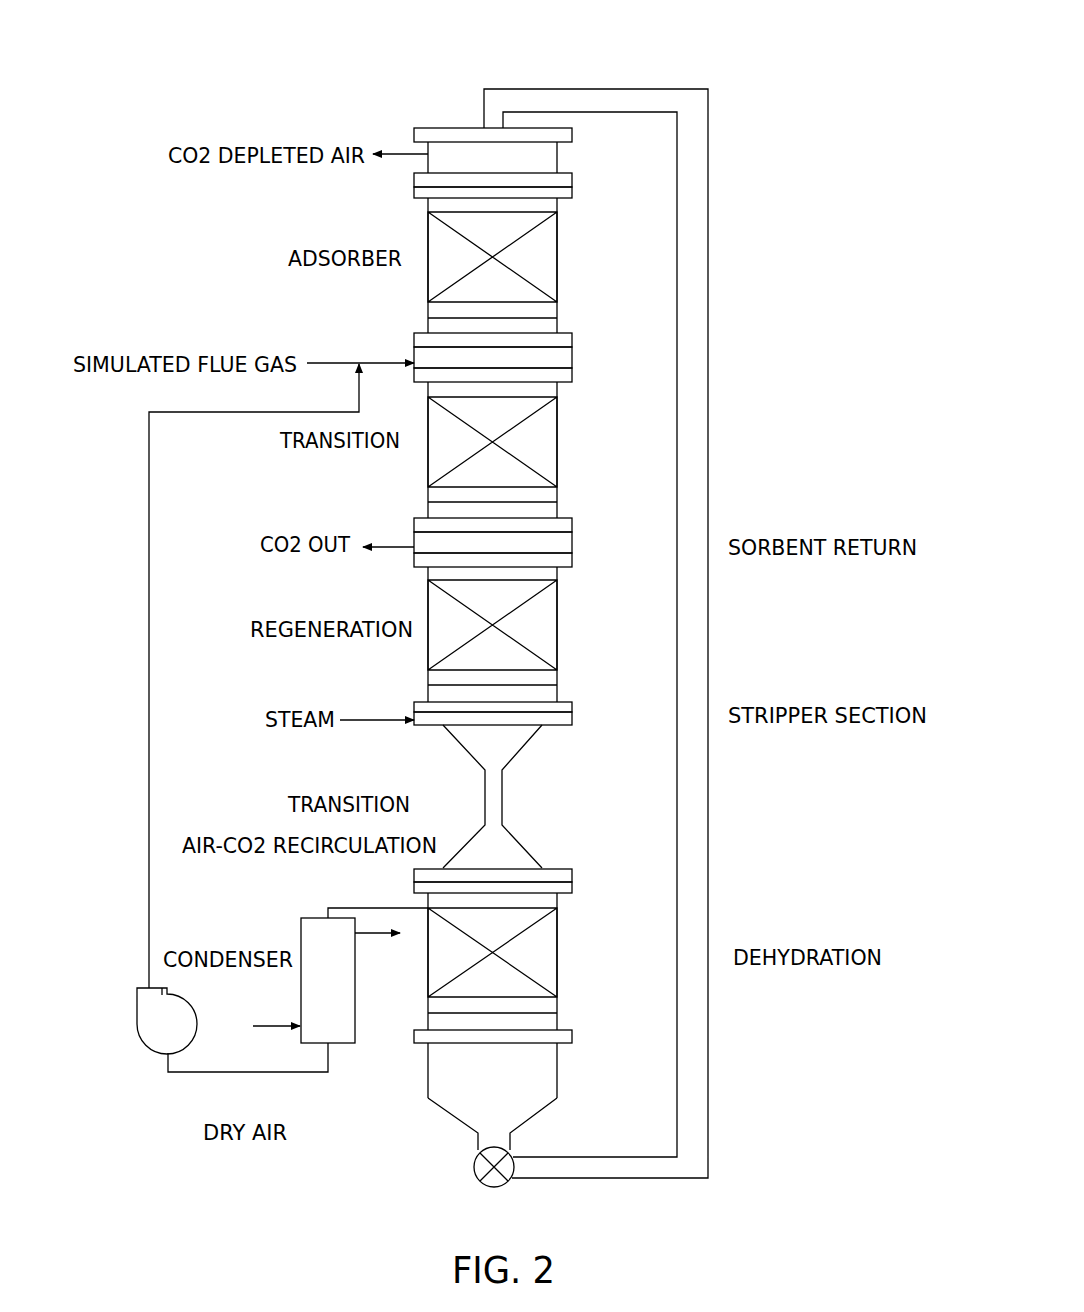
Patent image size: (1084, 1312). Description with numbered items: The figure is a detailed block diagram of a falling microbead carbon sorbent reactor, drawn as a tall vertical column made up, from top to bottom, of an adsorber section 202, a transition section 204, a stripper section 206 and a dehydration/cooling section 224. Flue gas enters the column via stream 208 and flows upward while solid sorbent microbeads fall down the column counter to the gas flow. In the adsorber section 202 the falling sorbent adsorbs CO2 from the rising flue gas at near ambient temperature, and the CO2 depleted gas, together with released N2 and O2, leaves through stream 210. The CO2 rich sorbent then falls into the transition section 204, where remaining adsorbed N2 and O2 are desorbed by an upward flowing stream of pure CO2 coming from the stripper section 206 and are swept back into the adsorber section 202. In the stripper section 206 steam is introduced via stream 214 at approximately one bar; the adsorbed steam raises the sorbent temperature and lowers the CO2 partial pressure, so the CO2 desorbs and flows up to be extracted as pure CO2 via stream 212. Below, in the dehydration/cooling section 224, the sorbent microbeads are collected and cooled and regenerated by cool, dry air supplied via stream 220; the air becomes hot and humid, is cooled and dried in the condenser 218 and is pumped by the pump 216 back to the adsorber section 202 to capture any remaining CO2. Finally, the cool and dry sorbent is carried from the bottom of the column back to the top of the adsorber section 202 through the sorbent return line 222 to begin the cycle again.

The adsorber section 202 is at (580, 333).
The transition section 204 is at (580, 520).
The stripper section 206 is at (580, 567).
The stream 208 is at (330, 361).
The stream 210 is at (407, 150).
The stream 212 is at (400, 547).
The stream 214 is at (373, 718).
The pump 216 is at (188, 1038).
The condenser 218 is at (347, 991).
The stream 220 is at (352, 908).
The sorbent return line 222 is at (708, 318).
The dehydration/cooling section 224 is at (580, 869).